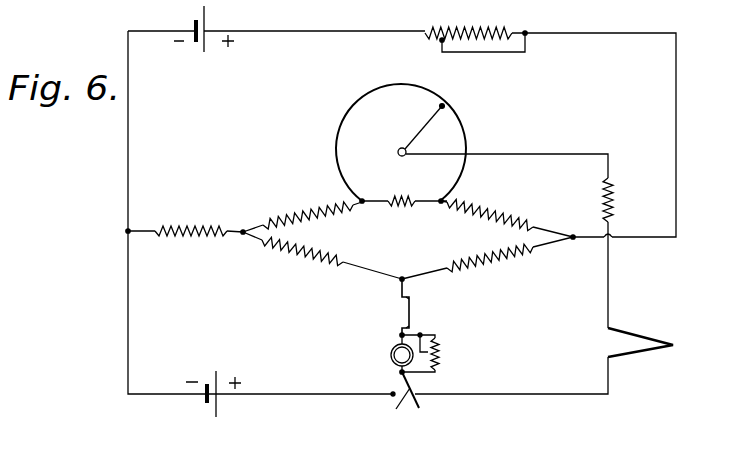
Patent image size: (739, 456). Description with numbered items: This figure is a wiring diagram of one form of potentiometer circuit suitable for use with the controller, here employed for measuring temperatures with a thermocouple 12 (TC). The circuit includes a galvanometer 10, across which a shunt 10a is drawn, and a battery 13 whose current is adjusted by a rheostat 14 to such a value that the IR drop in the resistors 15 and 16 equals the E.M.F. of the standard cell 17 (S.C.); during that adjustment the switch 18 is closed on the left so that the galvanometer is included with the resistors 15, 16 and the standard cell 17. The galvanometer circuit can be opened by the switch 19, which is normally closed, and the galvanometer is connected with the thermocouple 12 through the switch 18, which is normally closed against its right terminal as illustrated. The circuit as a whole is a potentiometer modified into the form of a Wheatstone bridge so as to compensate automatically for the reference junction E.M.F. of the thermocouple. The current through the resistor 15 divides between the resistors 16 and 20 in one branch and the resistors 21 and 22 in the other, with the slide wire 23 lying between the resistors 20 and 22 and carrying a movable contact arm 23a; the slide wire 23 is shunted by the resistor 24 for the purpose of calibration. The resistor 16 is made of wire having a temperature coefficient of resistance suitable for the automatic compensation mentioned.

The galvanometer 10 is at (389, 355).
The galvanometer shunt resistor 10a is at (443, 353).
The thermocouple 12 is at (655, 339).
The battery 13 is at (212, 26).
The rheostat 14 is at (503, 13).
The resistor 15 is at (208, 228).
The resistor 16 is at (326, 263).
The standard cell 17 is at (225, 376).
The switch 18 is at (397, 403).
The switch 19 is at (412, 318).
The resistor 20 is at (318, 206).
The resistor 21 is at (500, 263).
The resistor 22 is at (513, 216).
The slide wire 23 is at (462, 128).
The slide wire contact arm 23a is at (418, 122).
The resistor 24 is at (409, 189).